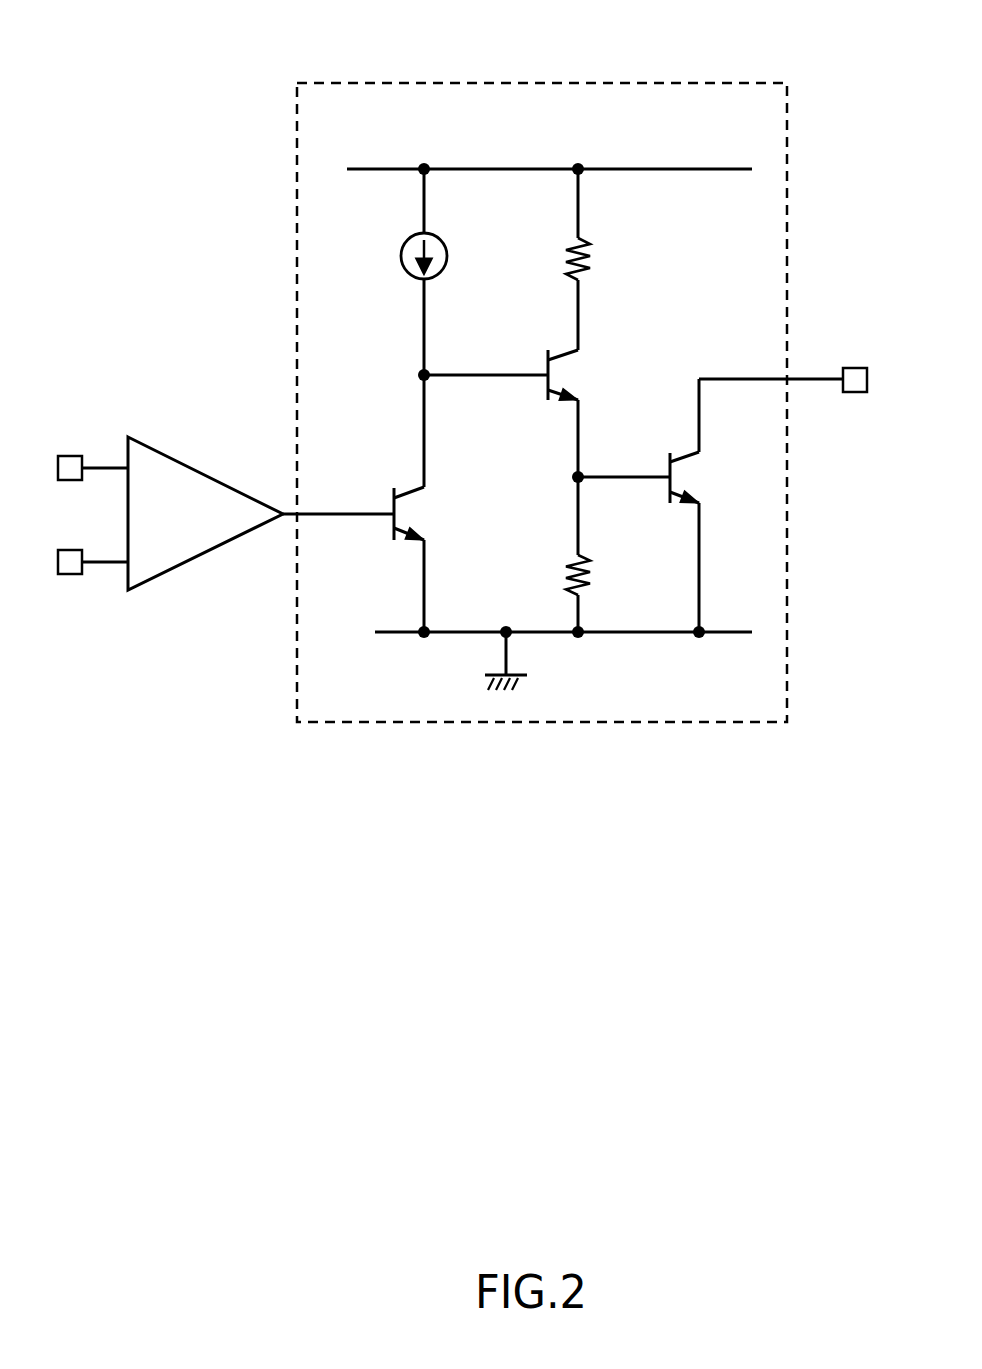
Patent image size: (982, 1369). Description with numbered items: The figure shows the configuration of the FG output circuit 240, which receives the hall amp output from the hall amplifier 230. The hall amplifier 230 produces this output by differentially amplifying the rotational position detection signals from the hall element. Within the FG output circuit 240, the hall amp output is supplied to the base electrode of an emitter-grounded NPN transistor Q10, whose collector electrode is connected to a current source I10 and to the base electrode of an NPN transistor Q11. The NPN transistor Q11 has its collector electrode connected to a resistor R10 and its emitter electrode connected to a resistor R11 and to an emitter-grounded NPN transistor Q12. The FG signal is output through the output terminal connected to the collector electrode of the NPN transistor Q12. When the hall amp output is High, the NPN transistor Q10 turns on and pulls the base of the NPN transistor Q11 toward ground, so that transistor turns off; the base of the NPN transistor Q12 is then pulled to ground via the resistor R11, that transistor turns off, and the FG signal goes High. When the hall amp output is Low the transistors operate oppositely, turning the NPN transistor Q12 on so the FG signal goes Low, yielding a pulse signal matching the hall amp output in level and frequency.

The hall amplifier 230 is at (200, 468).
The FG output circuit 240 is at (588, 364).
The current source I10 is at (448, 256).
The NPN transistor Q10 is at (434, 513).
The NPN transistor Q11 is at (591, 375).
The NPN transistor Q12 is at (710, 477).
The resistor R10 is at (606, 259).
The resistor R11 is at (606, 575).